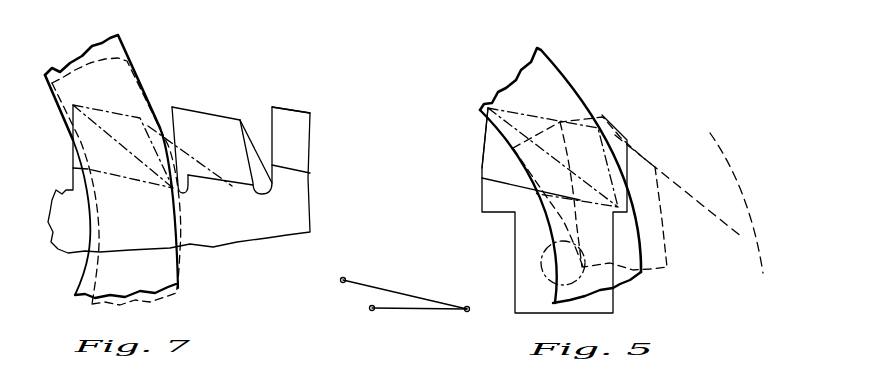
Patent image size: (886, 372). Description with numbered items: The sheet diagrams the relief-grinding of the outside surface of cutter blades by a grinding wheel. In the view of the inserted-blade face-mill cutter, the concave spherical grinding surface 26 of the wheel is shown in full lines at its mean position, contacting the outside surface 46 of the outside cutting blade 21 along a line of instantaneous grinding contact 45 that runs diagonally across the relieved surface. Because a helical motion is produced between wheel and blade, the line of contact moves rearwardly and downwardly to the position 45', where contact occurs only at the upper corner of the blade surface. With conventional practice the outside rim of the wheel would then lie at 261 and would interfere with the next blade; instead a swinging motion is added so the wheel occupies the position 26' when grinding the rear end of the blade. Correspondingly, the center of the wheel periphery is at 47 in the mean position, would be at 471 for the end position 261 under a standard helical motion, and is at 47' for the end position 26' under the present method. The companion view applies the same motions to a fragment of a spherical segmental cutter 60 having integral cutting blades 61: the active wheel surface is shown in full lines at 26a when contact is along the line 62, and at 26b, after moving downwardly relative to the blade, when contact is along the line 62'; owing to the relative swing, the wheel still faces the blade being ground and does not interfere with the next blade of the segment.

In FIG. 7, the active grinding wheel surface at mean position 26a is at (128, 52).
In FIG. 7, the grinding wheel position at end contact 26b is at (173, 288).
In FIG. 7, the cutter segment fragment 60 is at (267, 232).
In FIG. 7, the integral cutting blades 61 is at (277, 120).
In FIG. 7, the line of grinding contact 62 is at (123, 146).
In FIG. 7, the end line of grinding contact 62' is at (190, 156).
In FIG. 5, the outside cutting blade 21 is at (520, 252).
In FIG. 5, the outside surface 46 is at (482, 163).
In FIG. 5, the concave spherical surface 26 is at (560, 175).
In FIG. 5, the grinding wheel end position 26' is at (598, 211).
In FIG. 5, the grinding wheel rim position under conventional practice 261 is at (746, 198).
In FIG. 5, the line of instantaneous grinding contact 45 is at (553, 157).
In FIG. 5, the end line of grinding contact 45' is at (678, 186).
In FIG. 5, the center of wheel periphery 47 is at (404, 277).
In FIG. 5, the center of wheel periphery at swung end position 47' is at (405, 324).
In FIG. 5, the center of wheel periphery under standard helical motion 471 is at (468, 312).